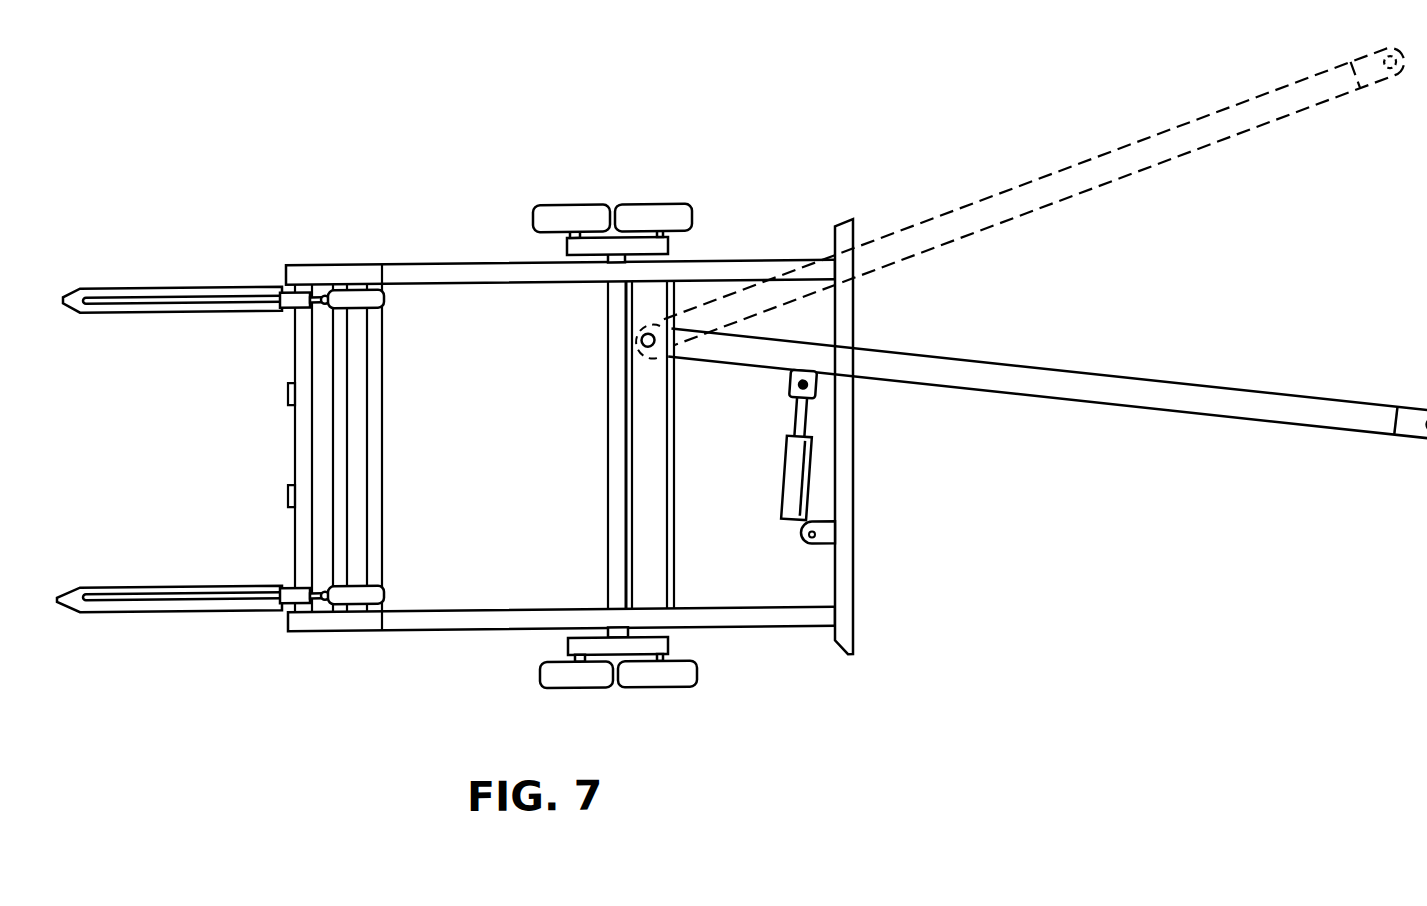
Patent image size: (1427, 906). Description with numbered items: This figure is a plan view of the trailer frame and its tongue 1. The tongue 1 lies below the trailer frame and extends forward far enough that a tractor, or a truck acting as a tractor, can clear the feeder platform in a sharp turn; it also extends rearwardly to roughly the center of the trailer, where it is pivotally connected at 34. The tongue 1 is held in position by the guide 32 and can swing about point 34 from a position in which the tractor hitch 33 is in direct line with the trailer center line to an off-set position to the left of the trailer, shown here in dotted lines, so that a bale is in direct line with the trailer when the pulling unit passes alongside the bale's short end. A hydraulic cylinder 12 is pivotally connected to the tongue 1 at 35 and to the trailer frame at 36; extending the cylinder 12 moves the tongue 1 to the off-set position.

The tongue 1 is at (1093, 183).
The cylinder 12 is at (764, 477).
The guide 32 is at (854, 230).
The tractor hitch 33 is at (1398, 80).
The pivotal connection 34 is at (641, 338).
The cylinder-to-tongue pivot connection 35 is at (788, 389).
The cylinder-to-frame pivot connection 36 is at (808, 543).